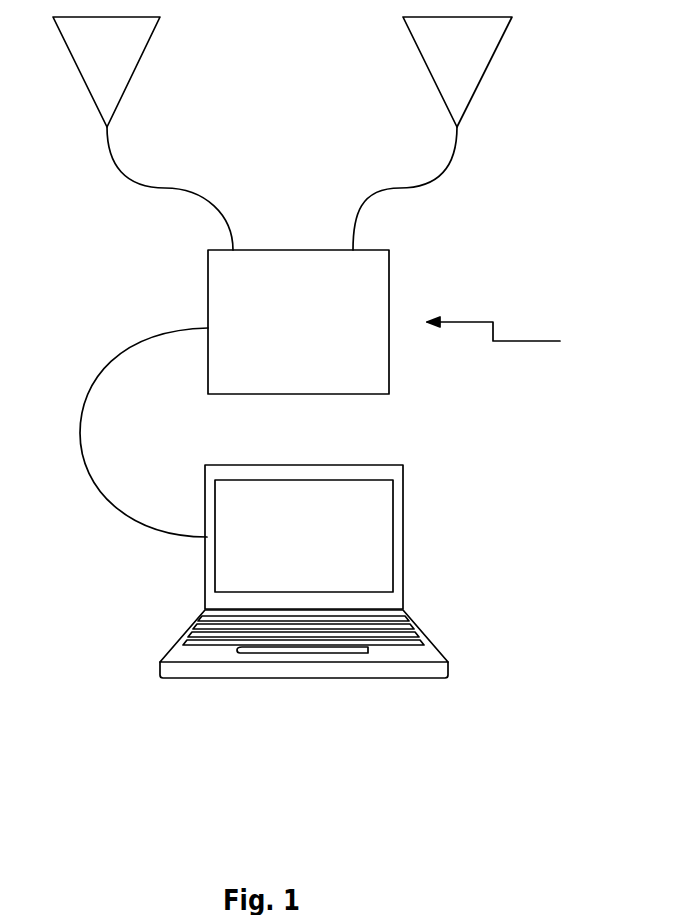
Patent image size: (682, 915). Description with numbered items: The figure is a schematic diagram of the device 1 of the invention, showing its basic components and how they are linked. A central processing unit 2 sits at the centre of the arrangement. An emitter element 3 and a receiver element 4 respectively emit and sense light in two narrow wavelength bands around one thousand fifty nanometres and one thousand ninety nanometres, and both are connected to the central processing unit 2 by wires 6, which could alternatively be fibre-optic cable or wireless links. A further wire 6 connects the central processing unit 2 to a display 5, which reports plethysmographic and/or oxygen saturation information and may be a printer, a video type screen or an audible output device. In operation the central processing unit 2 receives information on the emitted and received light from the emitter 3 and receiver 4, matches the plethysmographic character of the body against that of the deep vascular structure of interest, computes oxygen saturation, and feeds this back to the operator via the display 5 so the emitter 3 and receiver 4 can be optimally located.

The device 1 is at (511, 336).
The central processing unit 2 is at (298, 322).
The emitter element 3 is at (106, 72).
The receiver element 4 is at (457, 72).
The display 5 is at (304, 571).
The wires 6 is at (137, 180).